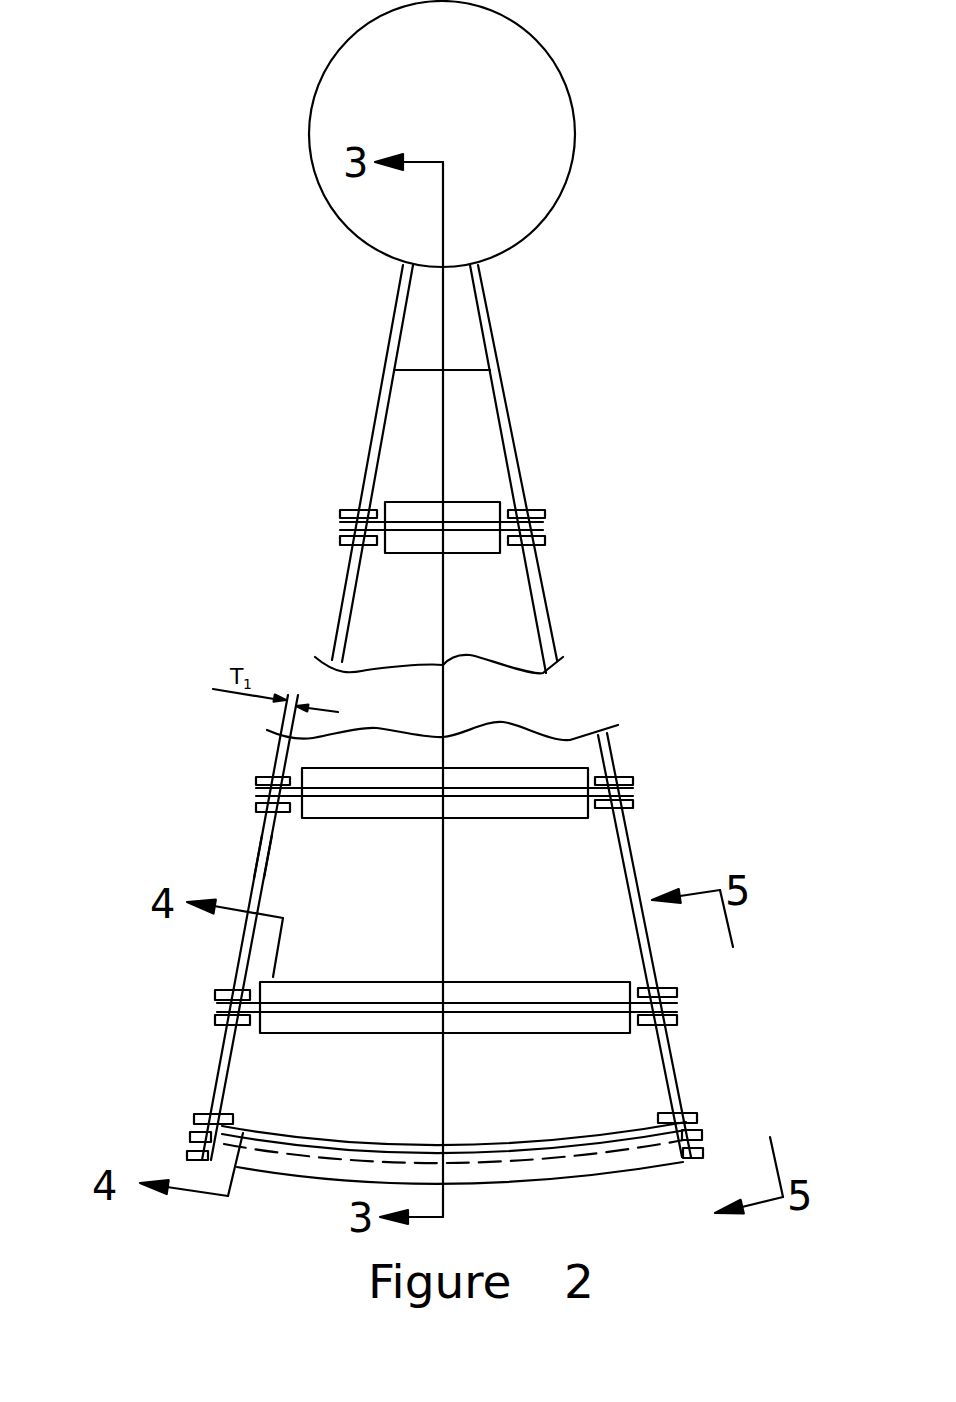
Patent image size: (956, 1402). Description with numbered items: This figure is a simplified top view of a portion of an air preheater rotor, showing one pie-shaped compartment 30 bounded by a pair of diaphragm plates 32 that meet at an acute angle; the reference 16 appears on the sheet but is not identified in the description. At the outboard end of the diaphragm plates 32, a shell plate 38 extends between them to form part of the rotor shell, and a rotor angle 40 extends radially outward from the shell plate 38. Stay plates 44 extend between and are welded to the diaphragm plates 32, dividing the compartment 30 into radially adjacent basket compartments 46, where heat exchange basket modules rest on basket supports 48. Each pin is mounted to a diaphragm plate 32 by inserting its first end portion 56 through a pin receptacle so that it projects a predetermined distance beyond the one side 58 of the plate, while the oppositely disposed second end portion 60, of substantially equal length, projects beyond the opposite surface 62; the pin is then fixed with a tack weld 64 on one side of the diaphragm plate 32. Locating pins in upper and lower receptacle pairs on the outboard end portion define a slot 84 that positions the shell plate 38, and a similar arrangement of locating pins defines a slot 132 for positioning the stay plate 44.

The spherical tank 16 is at (557, 175).
The pie-shaped compartment 30 is at (123, 883).
The diaphragm plate 32 is at (517, 452).
The stay plate 44 is at (513, 513).
The basket compartment 46 is at (571, 881).
The basket support 48 is at (588, 818).
The one side of the diaphragm plate 58 is at (265, 880).
The opposite surface of the diaphragm plate 62 is at (258, 868).
The tack weld 64 is at (215, 993).
The slot 132 is at (220, 1008).
The first end portion 56 is at (233, 1117).
The second end portion 60 is at (197, 1115).
The slot 84 is at (697, 1122).
The shell plate 38 is at (477, 1143).
The rotor angle 40 is at (477, 1180).